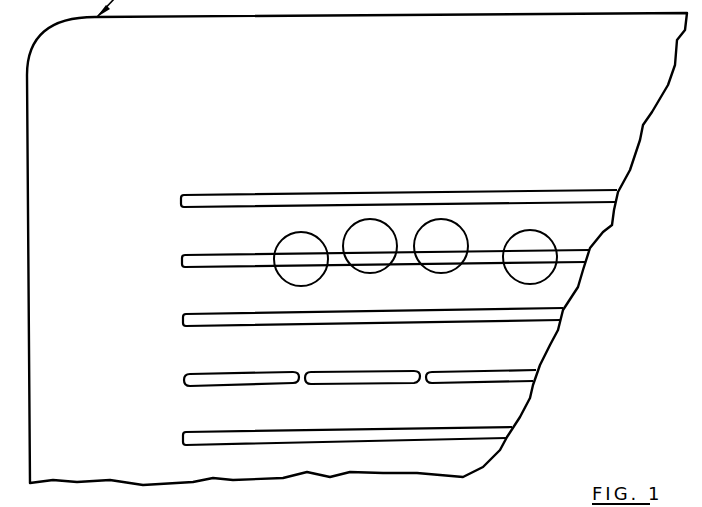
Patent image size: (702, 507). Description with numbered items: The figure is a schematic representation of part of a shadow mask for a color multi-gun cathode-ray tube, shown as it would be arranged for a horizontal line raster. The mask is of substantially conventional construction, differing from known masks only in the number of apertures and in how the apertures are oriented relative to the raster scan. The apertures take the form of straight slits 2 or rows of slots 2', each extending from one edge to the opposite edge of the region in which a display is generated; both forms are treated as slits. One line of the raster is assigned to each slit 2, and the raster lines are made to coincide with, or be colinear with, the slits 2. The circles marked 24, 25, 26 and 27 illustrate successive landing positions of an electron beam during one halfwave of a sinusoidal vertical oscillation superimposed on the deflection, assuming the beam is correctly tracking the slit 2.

The straight slit 2 is at (378, 304).
The row of slots 2' is at (360, 360).
The landing position 24 is at (276, 242).
The landing position 25 is at (351, 227).
The landing position 26 is at (461, 228).
The landing position 27 is at (543, 231).